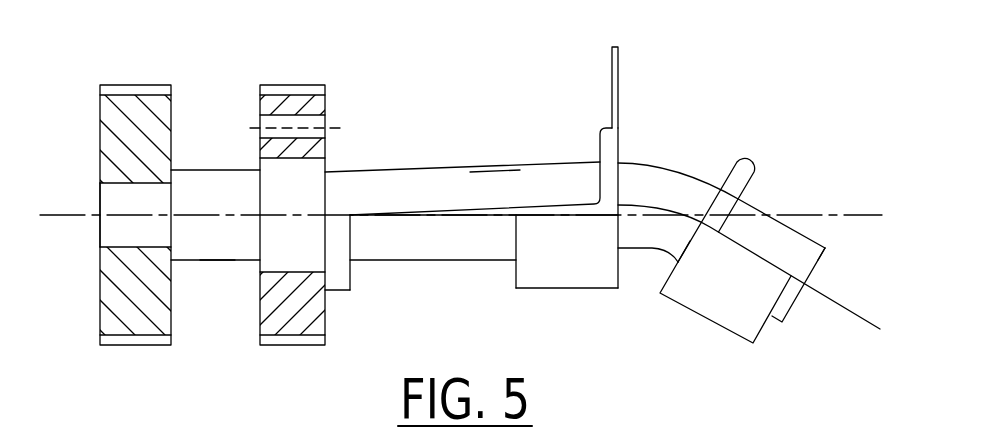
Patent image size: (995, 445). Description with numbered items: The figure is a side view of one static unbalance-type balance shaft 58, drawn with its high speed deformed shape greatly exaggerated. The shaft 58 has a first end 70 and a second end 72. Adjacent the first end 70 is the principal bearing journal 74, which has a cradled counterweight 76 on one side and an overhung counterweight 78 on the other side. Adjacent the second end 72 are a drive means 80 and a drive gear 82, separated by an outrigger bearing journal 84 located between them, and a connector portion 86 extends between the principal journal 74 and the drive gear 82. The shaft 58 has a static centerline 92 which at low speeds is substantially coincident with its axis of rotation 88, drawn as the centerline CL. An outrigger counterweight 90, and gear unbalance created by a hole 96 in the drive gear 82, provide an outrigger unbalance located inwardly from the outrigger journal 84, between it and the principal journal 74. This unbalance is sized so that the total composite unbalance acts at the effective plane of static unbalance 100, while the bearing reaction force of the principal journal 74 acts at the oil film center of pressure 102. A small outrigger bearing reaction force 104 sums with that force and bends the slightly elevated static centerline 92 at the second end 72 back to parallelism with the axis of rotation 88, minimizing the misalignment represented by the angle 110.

The balance shaft 58 is at (505, 142).
The first end 70 is at (838, 255).
The second end 72 is at (87, 189).
The principal bearing journal 74 is at (683, 160).
The cradled counterweight 76 is at (572, 279).
The overhung counterweight 78 is at (748, 333).
The drive means 80 is at (140, 327).
The drive gear 82 is at (293, 325).
The outrigger bearing journal 84 is at (203, 178).
The connector portion 86 is at (420, 262).
The axis of rotation 88 is at (772, 219).
The outrigger counterweight 90 is at (343, 282).
The static centerline 92 is at (450, 212).
The hole 96 is at (313, 110).
The effective plane of static unbalance 100 is at (646, 263).
The oil film center of pressure 102 is at (673, 275).
The outrigger bearing reaction force 104 is at (217, 273).
The angle 110 is at (580, 65).
The centerline CL is at (830, 217).